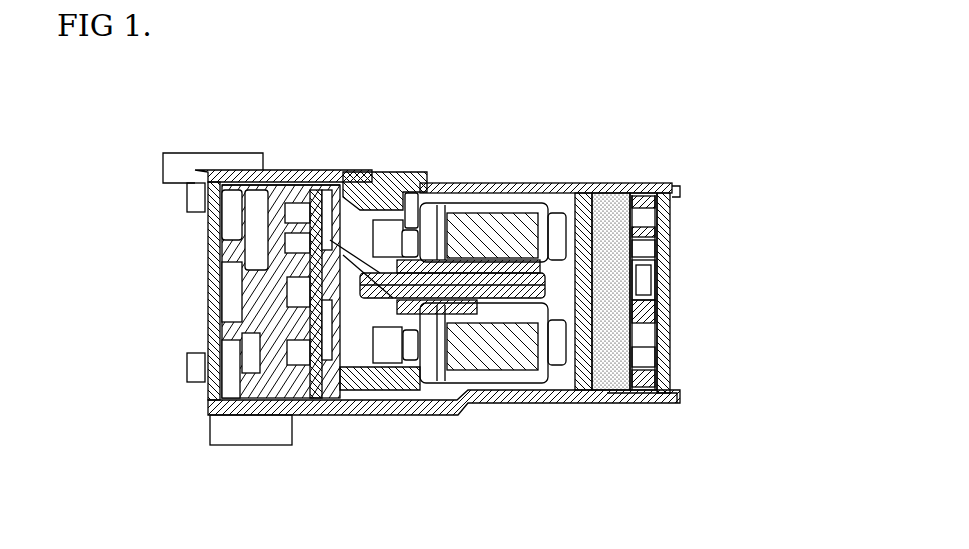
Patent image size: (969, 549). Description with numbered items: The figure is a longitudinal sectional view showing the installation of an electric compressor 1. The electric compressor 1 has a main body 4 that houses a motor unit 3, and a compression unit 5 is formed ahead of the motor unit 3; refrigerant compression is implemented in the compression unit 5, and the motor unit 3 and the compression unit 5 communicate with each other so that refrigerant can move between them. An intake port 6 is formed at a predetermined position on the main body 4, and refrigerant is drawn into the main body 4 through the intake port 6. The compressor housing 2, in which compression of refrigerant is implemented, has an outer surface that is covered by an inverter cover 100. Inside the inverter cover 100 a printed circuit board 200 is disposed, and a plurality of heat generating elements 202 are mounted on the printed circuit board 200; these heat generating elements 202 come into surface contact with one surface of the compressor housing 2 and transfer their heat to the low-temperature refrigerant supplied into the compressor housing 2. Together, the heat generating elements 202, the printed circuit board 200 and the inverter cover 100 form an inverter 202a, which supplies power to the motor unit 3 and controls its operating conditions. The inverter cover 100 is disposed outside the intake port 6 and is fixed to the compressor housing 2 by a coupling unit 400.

The electric compressor 1 is at (503, 266).
The compressor housing 2 is at (602, 186).
The motor unit 3 is at (500, 205).
The main body 4 is at (418, 172).
The compression unit 5 is at (272, 178).
The intake port 6 is at (564, 404).
The inverter cover 100 is at (678, 268).
The printed circuit board 200 is at (673, 322).
The heat generating elements 202 is at (673, 292).
The inverter 202a is at (778, 245).
The coupling unit 400 is at (680, 190).